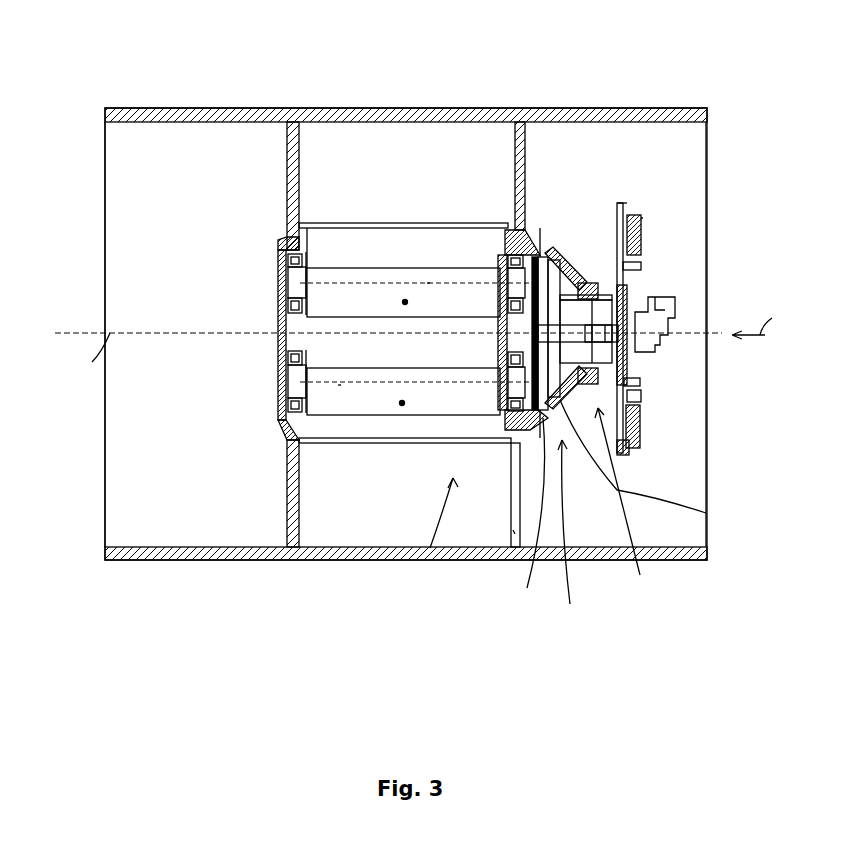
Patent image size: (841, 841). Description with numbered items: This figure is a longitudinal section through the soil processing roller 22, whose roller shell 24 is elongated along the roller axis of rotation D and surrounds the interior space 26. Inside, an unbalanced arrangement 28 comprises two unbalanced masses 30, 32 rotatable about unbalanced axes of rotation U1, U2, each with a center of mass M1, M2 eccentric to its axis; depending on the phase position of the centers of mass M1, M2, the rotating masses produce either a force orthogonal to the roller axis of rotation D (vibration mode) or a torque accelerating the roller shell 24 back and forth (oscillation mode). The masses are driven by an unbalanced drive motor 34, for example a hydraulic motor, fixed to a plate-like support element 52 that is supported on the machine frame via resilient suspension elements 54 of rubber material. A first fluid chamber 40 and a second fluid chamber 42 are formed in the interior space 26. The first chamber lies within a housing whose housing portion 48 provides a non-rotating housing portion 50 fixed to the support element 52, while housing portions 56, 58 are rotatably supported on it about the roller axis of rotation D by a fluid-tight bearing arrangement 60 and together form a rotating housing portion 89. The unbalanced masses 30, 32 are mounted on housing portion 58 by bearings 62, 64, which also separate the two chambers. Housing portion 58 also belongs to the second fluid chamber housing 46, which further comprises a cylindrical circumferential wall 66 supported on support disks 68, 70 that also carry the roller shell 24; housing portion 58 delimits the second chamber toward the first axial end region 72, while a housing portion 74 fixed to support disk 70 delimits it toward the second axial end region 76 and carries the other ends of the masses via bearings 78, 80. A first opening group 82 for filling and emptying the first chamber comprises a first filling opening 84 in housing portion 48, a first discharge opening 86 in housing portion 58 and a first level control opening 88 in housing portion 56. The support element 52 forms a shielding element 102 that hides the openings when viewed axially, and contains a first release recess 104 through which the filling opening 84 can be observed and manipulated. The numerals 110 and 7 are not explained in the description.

The soil processing roller 22 is at (105, 76).
The roller shell 24 is at (134, 107).
The interior space 26 is at (197, 556).
The unbalanced arrangement 28 is at (311, 432).
The unbalanced mass 30 is at (377, 268).
The unbalanced mass 32 is at (368, 420).
The unbalanced drive motor 34 is at (677, 300).
The first fluid chamber 40 is at (578, 357).
The second fluid chamber 42 is at (312, 245).
The second fluid chamber housing 46 is at (430, 548).
The housing portion 48 is at (578, 226).
The non-rotating housing portion 50 is at (707, 500).
The plate-like support element 52 is at (632, 272).
The resilient suspension elements 54 is at (641, 235).
The housing portion 56 is at (560, 222).
The housing portion 58 is at (532, 222).
The bearing arrangement 60 is at (624, 379).
The bearing 62 is at (502, 228).
The bearing 64 is at (518, 428).
The circumferential wall 66 is at (347, 223).
The support disk 68 is at (513, 532).
The support disk 70 is at (290, 552).
The first axial end region 72 is at (680, 485).
The housing portion 74 is at (280, 303).
The second axial end region 76 is at (148, 478).
The bearing 78 is at (286, 258).
The bearing 80 is at (276, 424).
The first opening group 82 is at (573, 540).
The first filling opening 84 is at (606, 225).
The first discharge opening 86 is at (530, 523).
The first level control opening 88 is at (636, 512).
The housing portion 89 is at (543, 218).
The shielding element 102 is at (627, 203).
The first release recess 104 is at (640, 393).
The fastening element 110 is at (642, 218).
The viewing direction 7 is at (754, 315).
The roller axis of rotation D is at (84, 365).
The unbalanced axis of rotation U1 is at (427, 283).
The unbalanced axis of rotation U2 is at (338, 386).
The center of mass M1 is at (405, 302).
The center of mass M2 is at (402, 403).